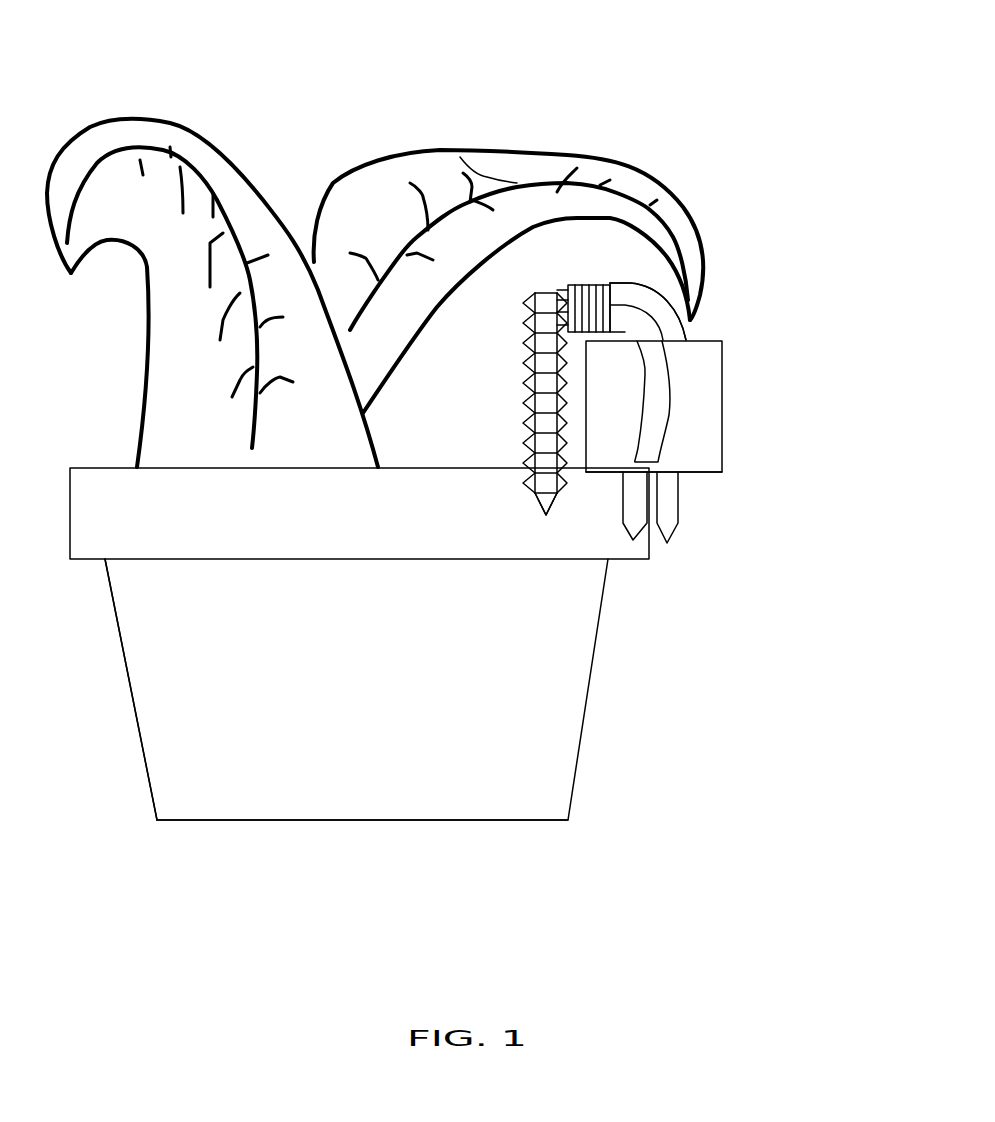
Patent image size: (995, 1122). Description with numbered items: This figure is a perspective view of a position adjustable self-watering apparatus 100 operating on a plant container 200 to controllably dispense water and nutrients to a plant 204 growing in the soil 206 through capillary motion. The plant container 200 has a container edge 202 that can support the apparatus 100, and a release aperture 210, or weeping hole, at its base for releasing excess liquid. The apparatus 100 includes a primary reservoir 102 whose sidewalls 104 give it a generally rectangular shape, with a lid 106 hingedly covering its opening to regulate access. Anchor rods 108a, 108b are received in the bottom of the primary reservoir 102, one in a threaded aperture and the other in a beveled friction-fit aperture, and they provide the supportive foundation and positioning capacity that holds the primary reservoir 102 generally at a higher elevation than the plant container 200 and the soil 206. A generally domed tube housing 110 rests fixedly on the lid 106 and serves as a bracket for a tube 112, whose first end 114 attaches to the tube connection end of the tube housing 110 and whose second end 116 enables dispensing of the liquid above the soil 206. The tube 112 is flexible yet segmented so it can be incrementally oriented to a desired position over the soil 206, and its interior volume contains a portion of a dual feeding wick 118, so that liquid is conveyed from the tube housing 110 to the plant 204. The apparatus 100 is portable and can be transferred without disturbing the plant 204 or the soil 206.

The position adjustable self-watering apparatus 100 is at (829, 96).
The primary reservoir 102 is at (705, 377).
The sidewalls 104 is at (678, 433).
The lid 106 is at (698, 340).
The anchor rod 108a is at (633, 513).
The anchor rod 108b is at (663, 493).
The tube housing 110 is at (633, 287).
The tube 112 is at (527, 365).
The first end 114 is at (563, 287).
The second end 116 is at (540, 503).
The dual feeding wick 118 is at (662, 407).
The plant container 200 is at (356, 689).
The container edge 202 is at (165, 467).
The plant 204 is at (363, 168).
The soil 206 is at (500, 550).
The release aperture 210 is at (367, 823).